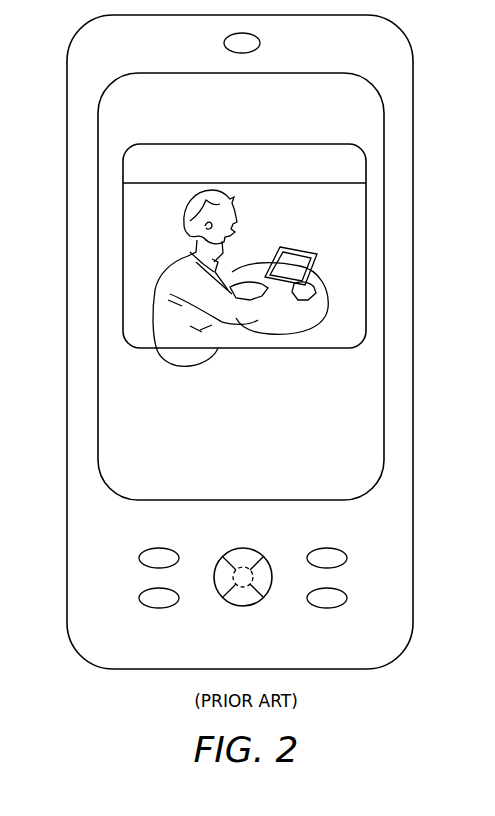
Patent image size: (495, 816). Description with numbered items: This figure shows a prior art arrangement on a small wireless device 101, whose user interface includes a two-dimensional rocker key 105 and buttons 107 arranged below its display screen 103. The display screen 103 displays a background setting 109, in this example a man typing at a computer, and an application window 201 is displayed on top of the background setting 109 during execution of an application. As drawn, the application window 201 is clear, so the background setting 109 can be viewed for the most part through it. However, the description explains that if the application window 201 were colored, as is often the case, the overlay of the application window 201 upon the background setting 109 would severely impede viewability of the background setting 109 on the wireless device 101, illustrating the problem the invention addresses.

The wireless device 101 is at (413, 128).
The display screen 103 is at (385, 220).
The two-dimensional rocker key 105 is at (243, 606).
The buttons 107 is at (159, 608).
The background setting 109 is at (170, 360).
The application window 201 is at (189, 143).